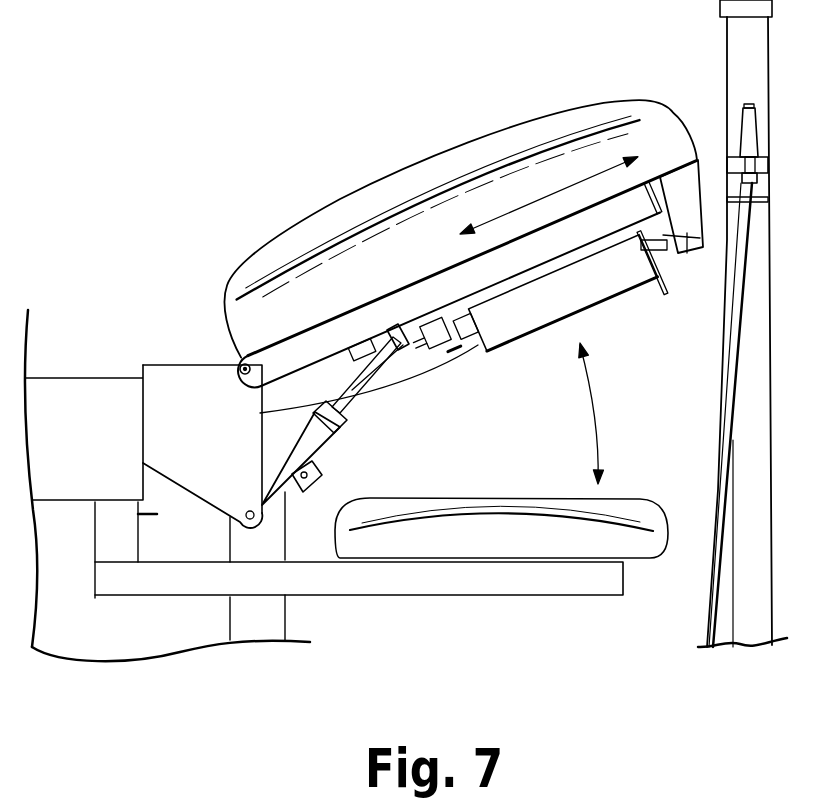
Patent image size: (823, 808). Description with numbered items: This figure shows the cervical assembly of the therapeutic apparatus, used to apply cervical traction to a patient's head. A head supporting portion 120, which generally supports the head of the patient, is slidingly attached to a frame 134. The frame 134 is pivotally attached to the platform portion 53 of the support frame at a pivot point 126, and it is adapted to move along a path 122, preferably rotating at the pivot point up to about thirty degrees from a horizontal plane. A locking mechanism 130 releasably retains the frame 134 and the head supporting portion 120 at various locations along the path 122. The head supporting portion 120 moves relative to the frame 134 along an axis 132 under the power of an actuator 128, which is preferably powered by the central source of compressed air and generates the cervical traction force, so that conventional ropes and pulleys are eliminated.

The platform portion 53 is at (133, 366).
The head supporting portion 120 is at (257, 212).
The path 122 is at (598, 423).
The pivot point 126 is at (240, 368).
The actuator 128 is at (508, 327).
The locking mechanism 130 is at (308, 437).
The axis 132 is at (540, 197).
The frame 134 is at (387, 313).